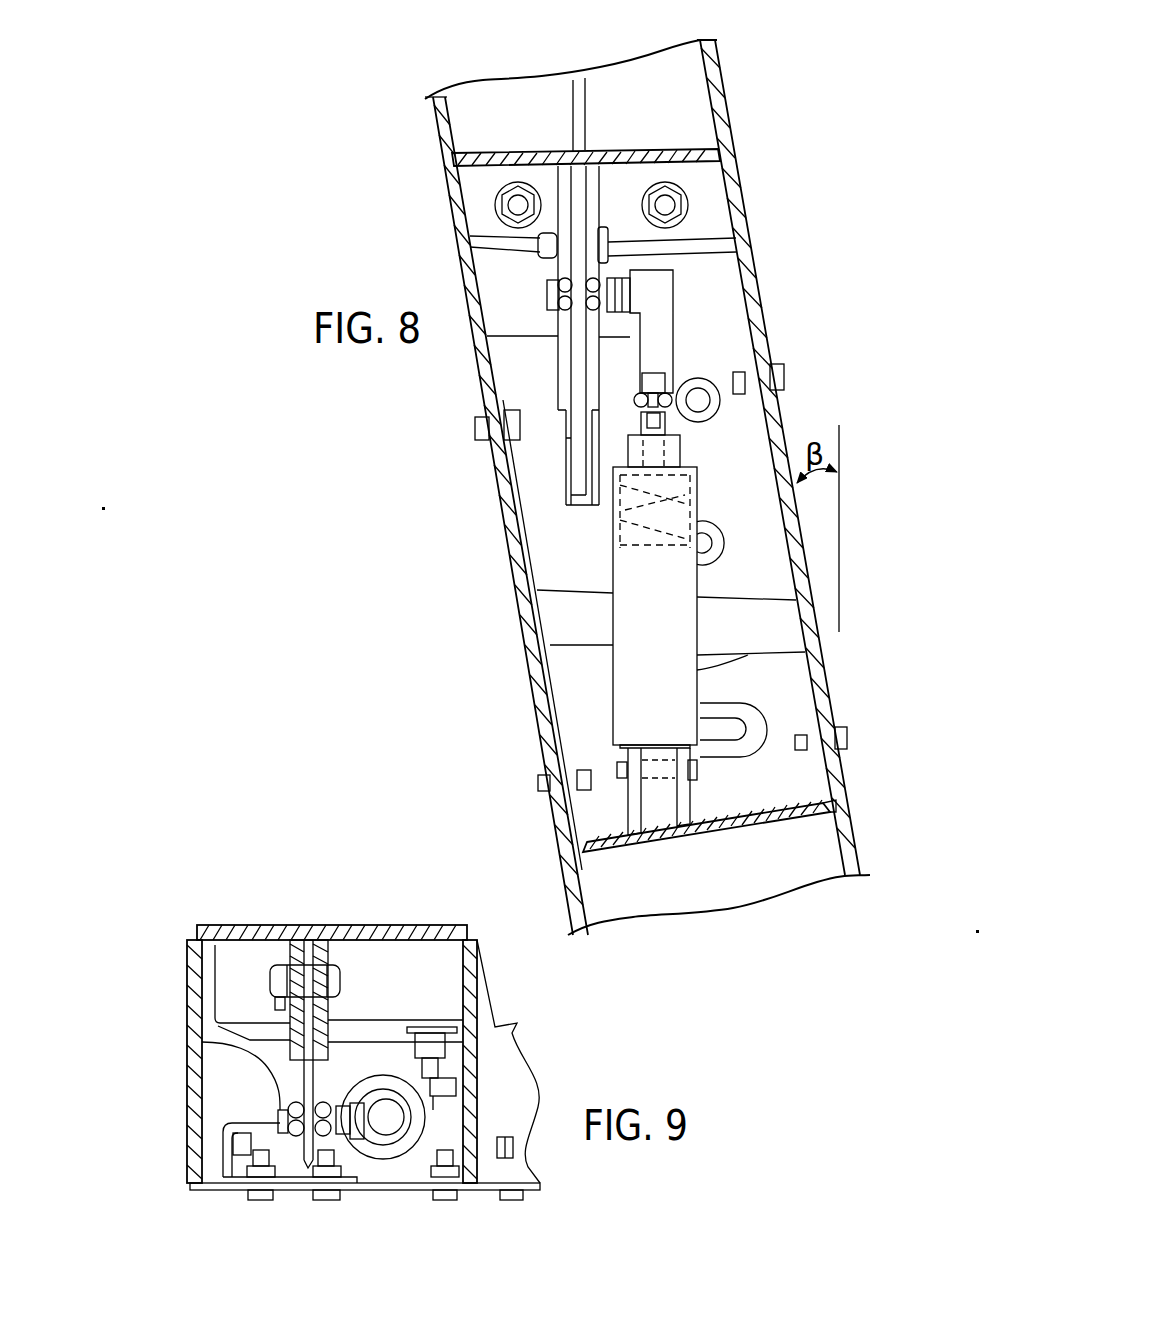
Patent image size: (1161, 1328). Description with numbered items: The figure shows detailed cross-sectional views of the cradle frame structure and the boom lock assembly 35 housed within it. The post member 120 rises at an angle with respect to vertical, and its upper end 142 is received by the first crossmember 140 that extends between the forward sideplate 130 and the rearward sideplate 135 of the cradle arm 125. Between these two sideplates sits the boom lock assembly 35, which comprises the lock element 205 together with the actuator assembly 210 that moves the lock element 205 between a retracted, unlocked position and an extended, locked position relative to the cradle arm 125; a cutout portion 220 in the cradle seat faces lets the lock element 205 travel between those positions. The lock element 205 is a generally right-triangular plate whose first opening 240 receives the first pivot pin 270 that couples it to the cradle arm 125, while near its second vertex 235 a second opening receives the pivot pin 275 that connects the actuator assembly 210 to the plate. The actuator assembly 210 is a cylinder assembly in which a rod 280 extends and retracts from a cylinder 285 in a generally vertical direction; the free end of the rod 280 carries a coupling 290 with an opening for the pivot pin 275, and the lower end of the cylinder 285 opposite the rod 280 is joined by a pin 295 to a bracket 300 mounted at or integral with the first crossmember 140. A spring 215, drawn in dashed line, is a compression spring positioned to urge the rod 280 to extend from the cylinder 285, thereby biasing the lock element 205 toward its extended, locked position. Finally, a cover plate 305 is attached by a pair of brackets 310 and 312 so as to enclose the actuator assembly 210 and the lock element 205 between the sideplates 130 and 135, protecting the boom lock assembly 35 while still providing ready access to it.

In FIG. 8, the cradle arm 125 is at (764, 46).
In FIG. 9, the cradle arm 125 is at (150, 1162).
In FIG. 8, the forward sideplate 130 is at (445, 198).
In FIG. 9, the forward sideplate 130 is at (182, 988).
In FIG. 8, the rearward sideplate 135 is at (742, 180).
In FIG. 9, the rearward sideplate 135 is at (497, 1000).
In FIG. 8, the boom lock assembly 35 is at (714, 295).
In FIG. 9, the boom lock assembly 35 is at (256, 1087).
In FIG. 8, the first opening 240 is at (597, 217).
In FIG. 8, the first pivot pin 270 is at (547, 260).
In FIG. 9, the first pivot pin 270 is at (347, 977).
In FIG. 8, the pivot pin 275 is at (553, 312).
In FIG. 9, the pivot pin 275 is at (202, 1042).
In FIG. 8, the second vertex 235 is at (555, 345).
In FIG. 8, the lock element 205 is at (556, 428).
In FIG. 8, the cutout portion 220 is at (561, 480).
In FIG. 8, the coupling 290 is at (685, 355).
In FIG. 8, the rod 280 is at (680, 422).
In FIG. 8, the spring 215 is at (752, 380).
In FIG. 8, the actuator assembly 210 is at (737, 681).
In FIG. 8, the bracket 312 is at (534, 560).
In FIG. 8, the bracket 310 is at (782, 542).
In FIG. 8, the cylinder 285 is at (737, 654).
In FIG. 8, the pin 295 is at (617, 787).
In FIG. 8, the bracket 300 is at (612, 817).
In FIG. 9, the bracket 300 is at (344, 1058).
In FIG. 8, the first crossmember 140 is at (737, 834).
In FIG. 8, the upper end 142 is at (828, 803).
In FIG. 8, the post member 120 is at (832, 846).
In FIG. 9, the cover plate 305 is at (396, 1192).